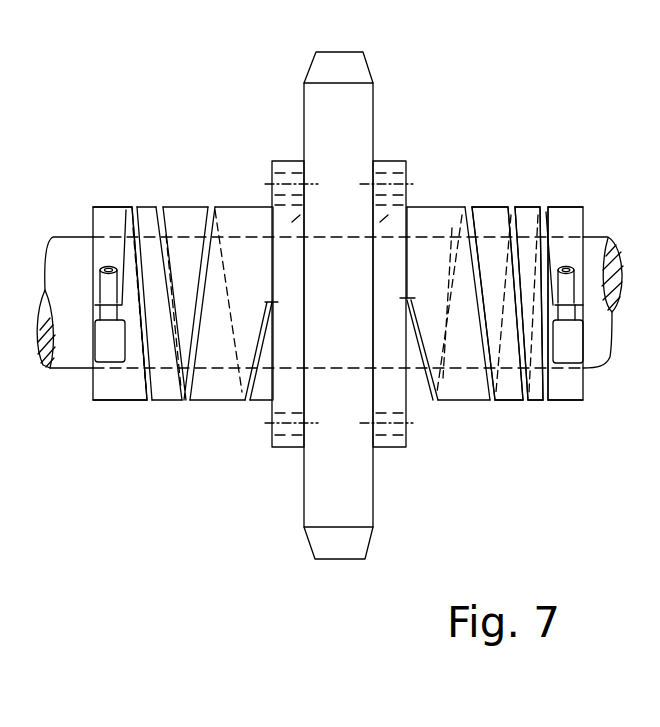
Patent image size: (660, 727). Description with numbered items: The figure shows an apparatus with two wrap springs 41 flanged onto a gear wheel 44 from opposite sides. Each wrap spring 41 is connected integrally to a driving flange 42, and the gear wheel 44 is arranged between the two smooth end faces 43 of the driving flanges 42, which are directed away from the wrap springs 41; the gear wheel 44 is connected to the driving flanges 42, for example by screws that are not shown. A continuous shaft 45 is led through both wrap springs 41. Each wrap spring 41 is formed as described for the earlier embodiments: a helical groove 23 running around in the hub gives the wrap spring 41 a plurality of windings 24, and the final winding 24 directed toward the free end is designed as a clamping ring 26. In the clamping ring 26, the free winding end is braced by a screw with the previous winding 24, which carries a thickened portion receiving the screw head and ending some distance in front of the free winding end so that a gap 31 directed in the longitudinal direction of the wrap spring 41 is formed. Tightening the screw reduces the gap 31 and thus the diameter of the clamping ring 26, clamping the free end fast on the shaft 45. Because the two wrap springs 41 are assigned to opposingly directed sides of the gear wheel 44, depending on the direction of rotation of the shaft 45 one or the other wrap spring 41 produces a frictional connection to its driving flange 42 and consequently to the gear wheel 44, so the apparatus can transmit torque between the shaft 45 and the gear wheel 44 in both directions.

The helical groove 23 is at (435, 400).
The windings 24 is at (562, 212).
The clamping ring 26 is at (568, 392).
The gap 31 is at (593, 237).
The wrap springs 41 is at (171, 190).
The driving flange 42 is at (280, 172).
The end faces 43 is at (307, 175).
The gear wheel 44 is at (360, 63).
The shaft 45 is at (72, 258).